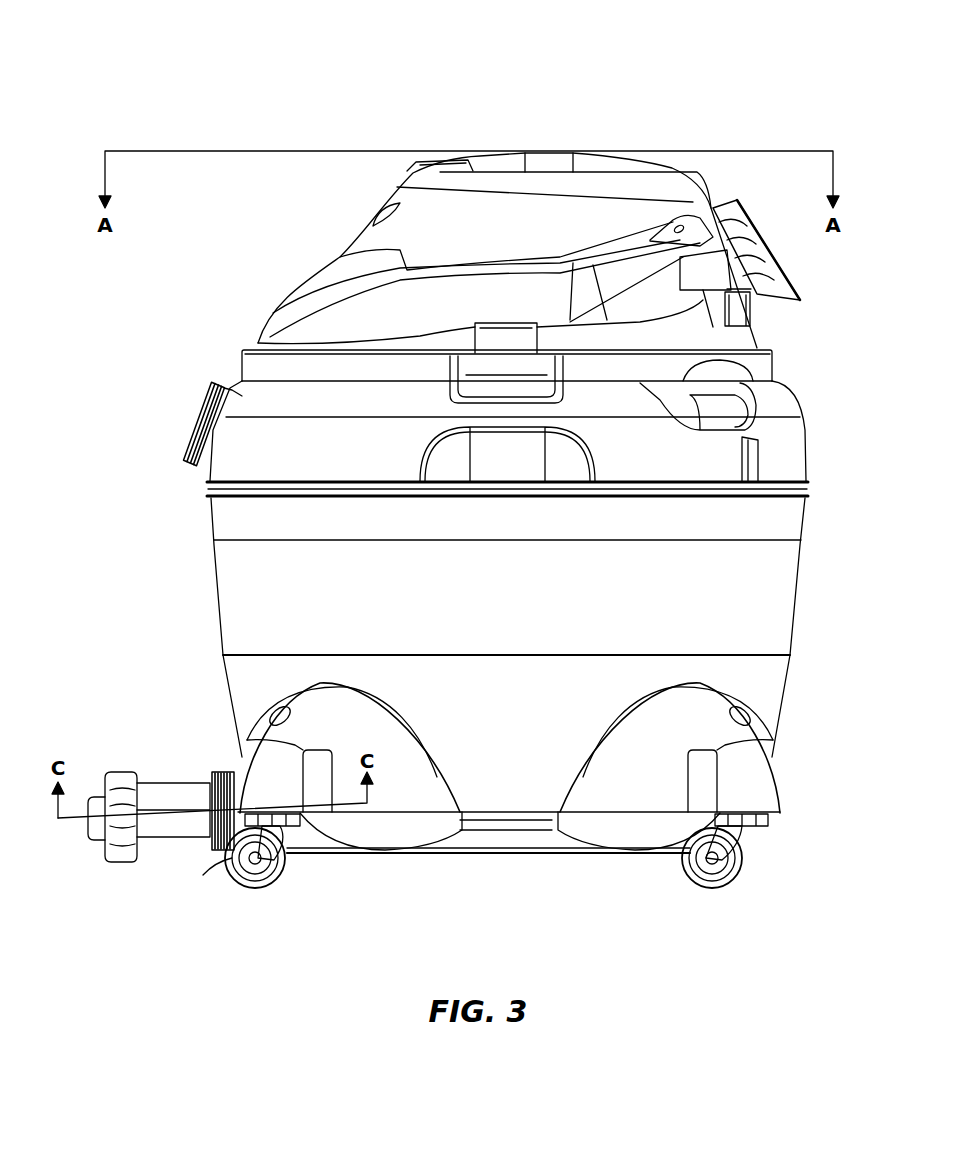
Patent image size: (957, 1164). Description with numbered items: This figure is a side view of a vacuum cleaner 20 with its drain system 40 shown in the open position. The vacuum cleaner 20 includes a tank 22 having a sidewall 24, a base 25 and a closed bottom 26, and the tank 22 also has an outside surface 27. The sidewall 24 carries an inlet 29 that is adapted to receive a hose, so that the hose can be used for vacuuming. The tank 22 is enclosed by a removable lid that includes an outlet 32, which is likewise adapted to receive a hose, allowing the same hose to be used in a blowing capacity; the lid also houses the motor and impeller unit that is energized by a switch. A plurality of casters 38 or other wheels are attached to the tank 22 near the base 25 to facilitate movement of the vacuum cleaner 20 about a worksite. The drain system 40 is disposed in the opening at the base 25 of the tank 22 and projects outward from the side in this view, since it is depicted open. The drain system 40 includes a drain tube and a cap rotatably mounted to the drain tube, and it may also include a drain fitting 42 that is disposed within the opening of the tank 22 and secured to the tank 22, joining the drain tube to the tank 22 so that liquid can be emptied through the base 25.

The vacuum cleaner 20 is at (703, 66).
The tank 22 is at (513, 878).
The sidewall 24 is at (778, 607).
The base 25 is at (535, 807).
The closed bottom 26 is at (445, 852).
The outside surface 27 is at (783, 712).
The inlet 29 is at (202, 420).
The outlet 32 is at (758, 232).
The casters 38 is at (258, 887).
The drain system 40 is at (104, 866).
The drain fitting 42 is at (212, 843).